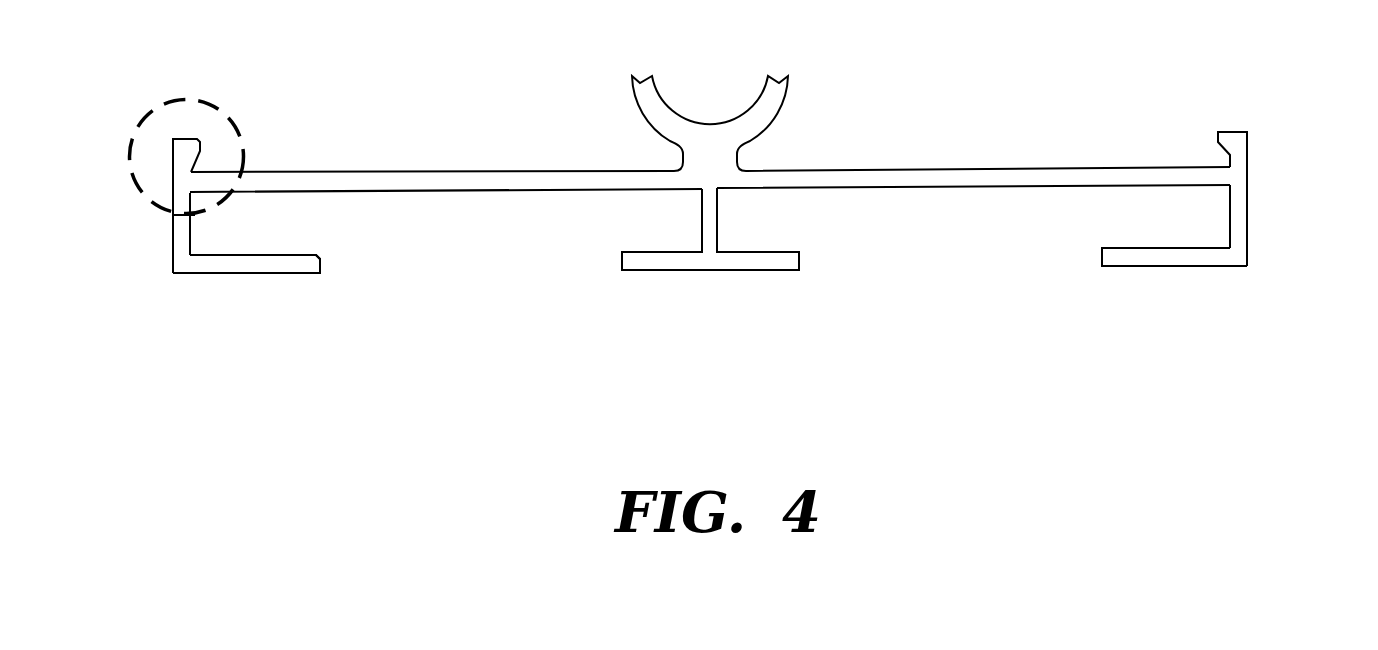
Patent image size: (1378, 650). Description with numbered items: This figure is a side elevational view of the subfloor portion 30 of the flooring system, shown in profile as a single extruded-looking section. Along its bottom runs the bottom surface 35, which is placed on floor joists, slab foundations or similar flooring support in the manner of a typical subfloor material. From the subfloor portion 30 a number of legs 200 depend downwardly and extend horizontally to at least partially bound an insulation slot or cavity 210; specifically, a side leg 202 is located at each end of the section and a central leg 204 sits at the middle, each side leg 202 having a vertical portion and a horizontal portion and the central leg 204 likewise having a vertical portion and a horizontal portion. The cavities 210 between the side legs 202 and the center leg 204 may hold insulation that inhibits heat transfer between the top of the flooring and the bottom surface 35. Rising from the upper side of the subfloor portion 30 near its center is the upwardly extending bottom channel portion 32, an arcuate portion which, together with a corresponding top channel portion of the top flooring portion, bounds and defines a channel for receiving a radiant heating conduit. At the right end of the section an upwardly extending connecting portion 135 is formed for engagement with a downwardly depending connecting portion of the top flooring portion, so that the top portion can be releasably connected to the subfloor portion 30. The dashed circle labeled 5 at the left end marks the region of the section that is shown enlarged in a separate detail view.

The detail circle (FIG. 5 view) 5 is at (130, 159).
The subfloor portion 30 is at (136, 316).
The bottom channel portion 32 is at (810, 106).
The bottom surface 35 is at (283, 274).
The upwardly extending connecting portions 135 is at (1247, 150).
The legs 200 is at (173, 238).
The side legs 202 is at (170, 253).
The central leg 204 is at (722, 271).
The insulation slot or cavity 210 is at (984, 235).